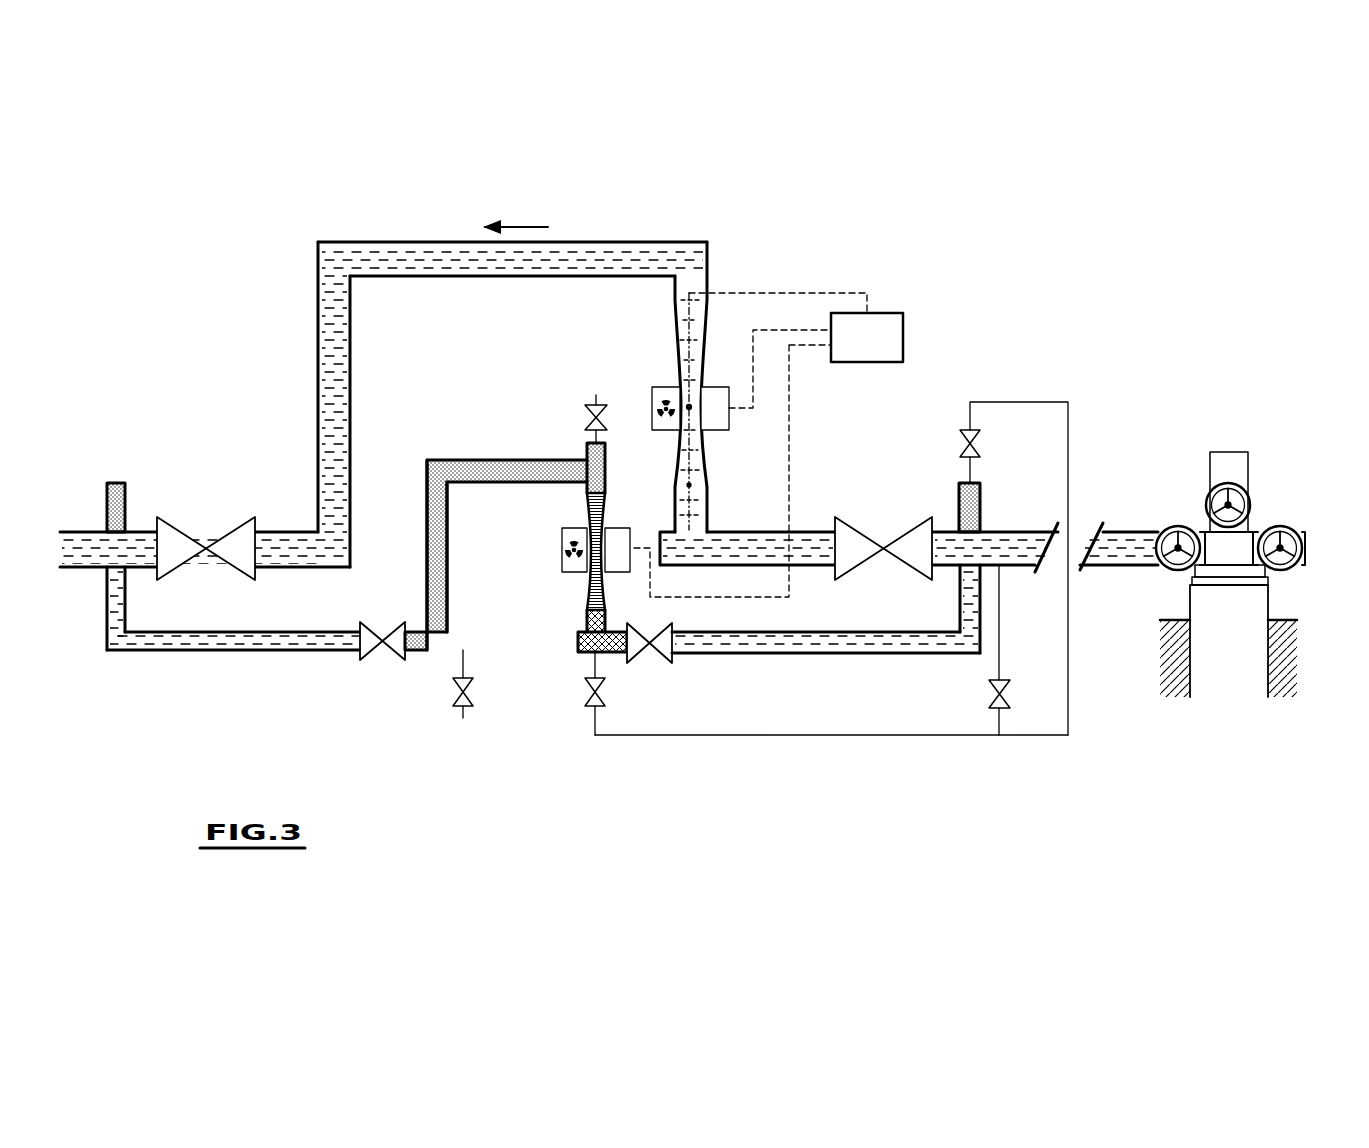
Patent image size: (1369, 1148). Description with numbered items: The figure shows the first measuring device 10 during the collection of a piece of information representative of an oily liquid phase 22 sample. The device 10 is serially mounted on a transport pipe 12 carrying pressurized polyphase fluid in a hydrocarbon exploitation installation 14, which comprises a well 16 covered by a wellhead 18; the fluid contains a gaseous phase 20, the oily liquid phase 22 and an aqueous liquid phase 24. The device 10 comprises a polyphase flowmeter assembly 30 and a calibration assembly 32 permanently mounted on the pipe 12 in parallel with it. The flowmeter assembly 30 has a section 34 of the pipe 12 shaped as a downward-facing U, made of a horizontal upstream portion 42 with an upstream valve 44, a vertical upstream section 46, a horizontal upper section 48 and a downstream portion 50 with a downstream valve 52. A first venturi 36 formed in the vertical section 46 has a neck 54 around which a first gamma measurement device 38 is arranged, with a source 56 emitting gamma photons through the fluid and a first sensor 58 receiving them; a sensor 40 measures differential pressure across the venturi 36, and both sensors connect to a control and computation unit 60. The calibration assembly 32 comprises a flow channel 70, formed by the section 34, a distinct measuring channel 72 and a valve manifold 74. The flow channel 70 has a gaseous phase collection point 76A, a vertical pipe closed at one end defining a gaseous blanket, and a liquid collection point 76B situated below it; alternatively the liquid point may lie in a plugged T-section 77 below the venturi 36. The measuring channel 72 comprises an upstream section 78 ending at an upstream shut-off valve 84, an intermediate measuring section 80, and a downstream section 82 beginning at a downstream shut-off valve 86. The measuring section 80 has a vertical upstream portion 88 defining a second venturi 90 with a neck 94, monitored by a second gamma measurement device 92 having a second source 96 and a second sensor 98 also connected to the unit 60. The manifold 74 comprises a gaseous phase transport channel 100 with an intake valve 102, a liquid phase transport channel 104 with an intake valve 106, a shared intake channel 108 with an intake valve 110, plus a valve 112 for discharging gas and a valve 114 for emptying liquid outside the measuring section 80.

The first measuring device 10 is at (128, 335).
The transport pipe 12 is at (1130, 515).
The hydrocarbon exploitation installation 14 is at (1258, 520).
The well 16 is at (1255, 655).
The wellhead 18 is at (1300, 535).
The gaseous phase 20 is at (496, 577).
The oily liquid phase 22 is at (561, 574).
The aqueous liquid phase 24 is at (610, 632).
The polyphase flowmeter assembly 30 is at (630, 230).
The calibration assembly 32 is at (232, 627).
The section of the pipe 34 is at (456, 366).
The first venturi 36 is at (672, 387).
The first gamma measurement device 38 is at (672, 421).
The sensor for measuring differential pressure 40 is at (766, 396).
The upstream portion 42 is at (862, 559).
The upstream valve 44 is at (920, 522).
The vertical upstream section 46 is at (675, 298).
The horizontal upper section 48 is at (375, 242).
The downstream portion 50 is at (318, 378).
The downstream valve 52 is at (206, 530).
The neck 54 is at (698, 445).
The source 56 is at (656, 432).
The first sensor 58 is at (720, 430).
The control and computation unit 60 is at (867, 337).
The flow channel 70 is at (456, 366).
The measuring channel 72 is at (232, 655).
The valve manifold 74 is at (833, 590).
The gaseous phase collection point 76A is at (980, 497).
The liquid phase collection point 76B is at (1000, 572).
The plugged T-section 77 is at (718, 583).
The upstream section 78 is at (745, 655).
The intermediate measuring section 80 is at (447, 600).
The downstream section 82 is at (128, 653).
The upstream shut-off valve 84 is at (663, 657).
The downstream shut-off valve 86 is at (360, 655).
The vertical upstream portion 88 is at (587, 618).
The second venturi 90 is at (587, 510).
The second gamma measurement device 92 is at (561, 533).
The neck 94 is at (590, 580).
The second source 96 is at (562, 540).
The second sensor 98 is at (618, 535).
The gaseous phase transport channel 100 is at (1022, 402).
The gaseous phase intake valve 102 is at (960, 440).
The liquid phase transport channel 104 is at (1000, 735).
The liquid phase intake valve 106 is at (990, 695).
The shared intake channel 108 is at (783, 737).
The intake valve 110 is at (587, 695).
The gas discharge valve 112 is at (585, 420).
The liquid emptying valve 114 is at (458, 706).